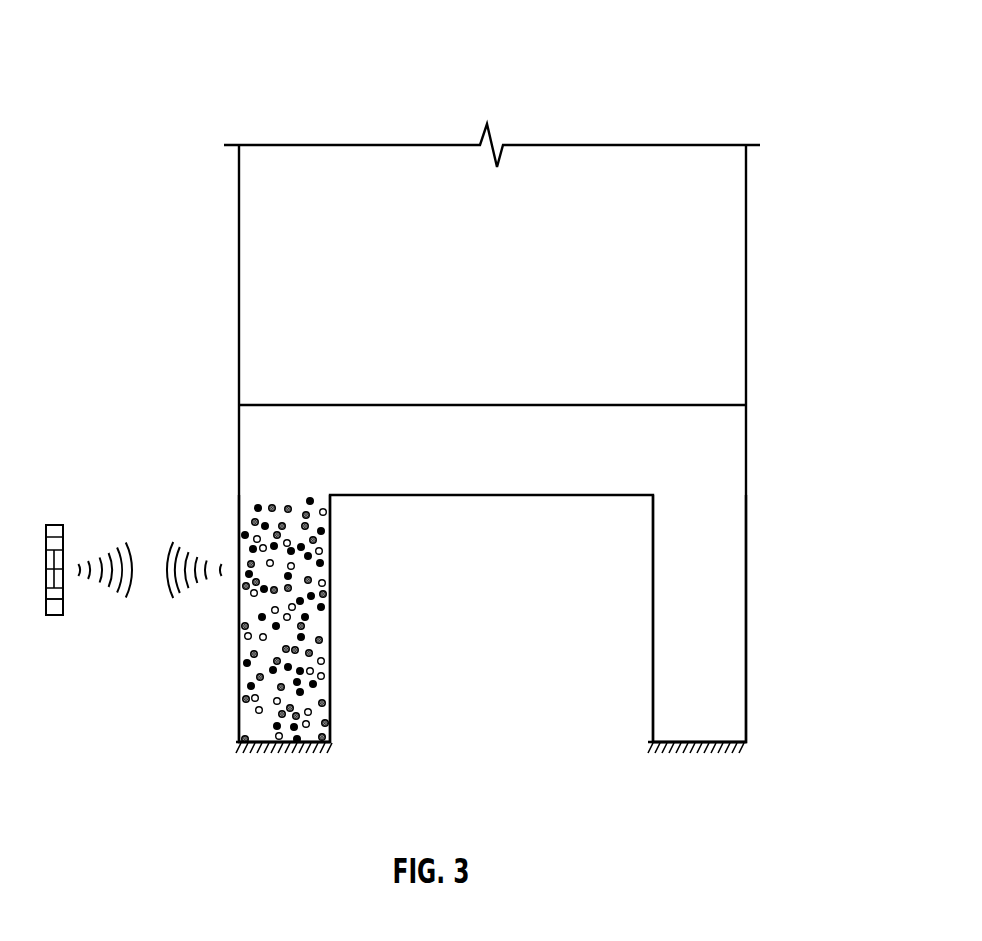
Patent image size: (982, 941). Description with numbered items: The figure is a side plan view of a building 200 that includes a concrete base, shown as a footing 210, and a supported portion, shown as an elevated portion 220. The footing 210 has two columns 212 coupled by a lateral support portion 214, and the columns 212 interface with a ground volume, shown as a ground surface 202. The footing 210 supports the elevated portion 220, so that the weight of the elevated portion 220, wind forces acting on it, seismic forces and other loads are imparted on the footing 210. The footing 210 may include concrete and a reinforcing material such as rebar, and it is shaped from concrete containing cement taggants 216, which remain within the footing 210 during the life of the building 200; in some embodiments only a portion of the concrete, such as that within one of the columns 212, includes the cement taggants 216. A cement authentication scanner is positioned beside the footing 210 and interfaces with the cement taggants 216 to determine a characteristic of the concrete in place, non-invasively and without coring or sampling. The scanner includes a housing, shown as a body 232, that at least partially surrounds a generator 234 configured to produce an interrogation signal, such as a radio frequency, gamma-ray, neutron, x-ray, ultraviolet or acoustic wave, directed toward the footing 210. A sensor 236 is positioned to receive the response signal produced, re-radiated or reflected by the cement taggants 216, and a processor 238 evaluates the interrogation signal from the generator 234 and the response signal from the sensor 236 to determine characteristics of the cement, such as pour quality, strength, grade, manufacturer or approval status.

The building 200 is at (153, 48).
The elevated portion 220 is at (203, 311).
The lateral support portion 214 is at (503, 440).
The footing 210 is at (763, 541).
The column 212 is at (260, 665).
The cement taggants 216 is at (315, 541).
The ground surface 202 is at (287, 757).
The body 232 is at (55, 525).
The generator 234 is at (60, 553).
The sensor 236 is at (60, 587).
The processor 238 is at (53, 614).